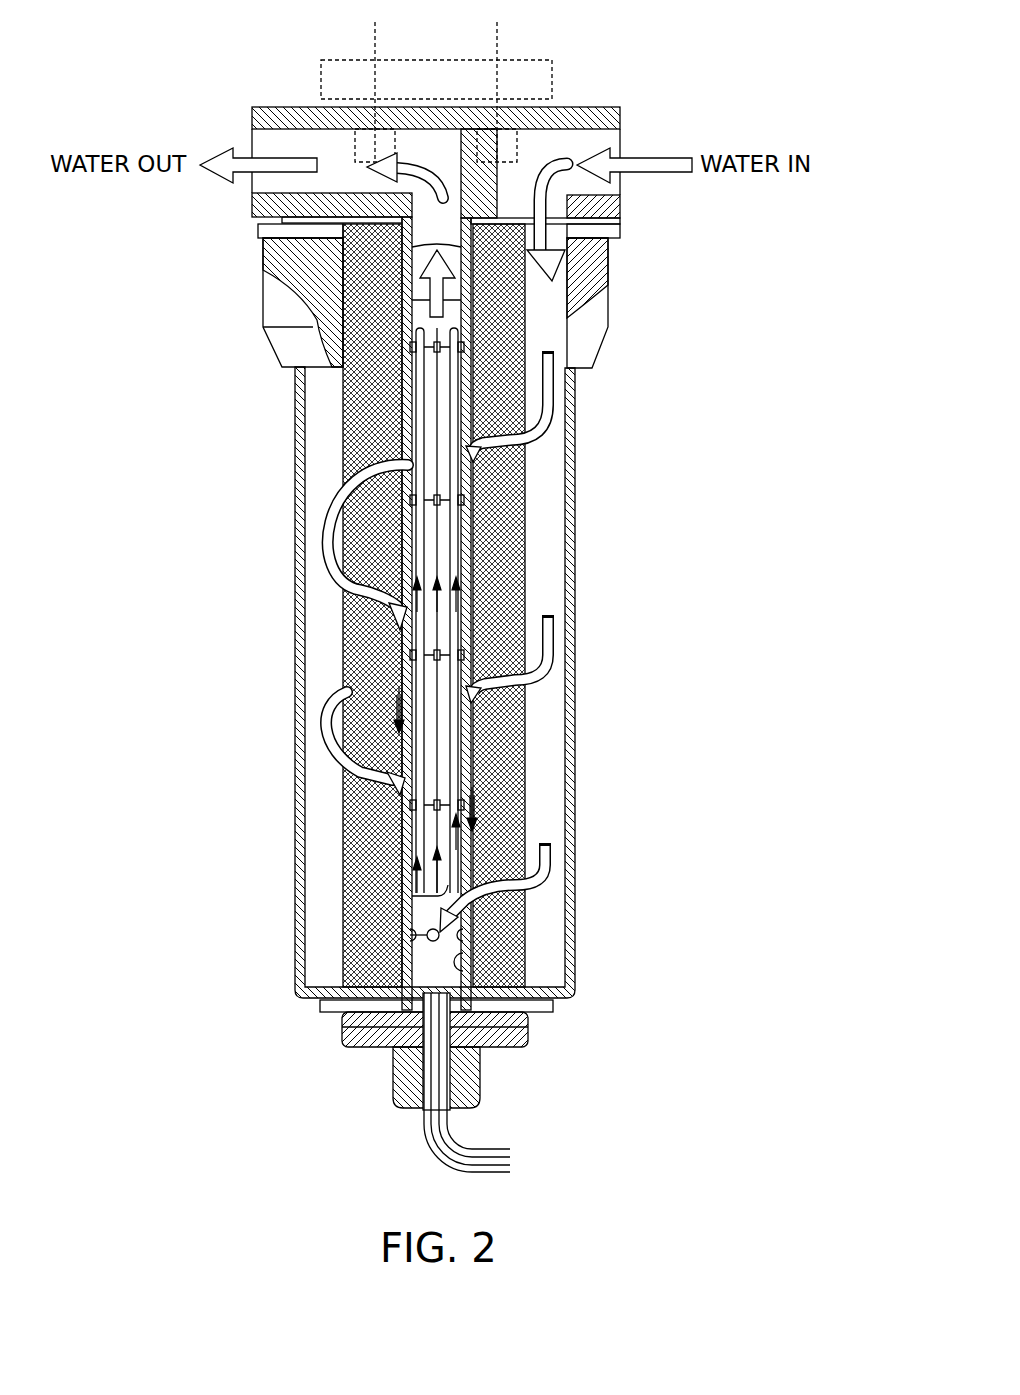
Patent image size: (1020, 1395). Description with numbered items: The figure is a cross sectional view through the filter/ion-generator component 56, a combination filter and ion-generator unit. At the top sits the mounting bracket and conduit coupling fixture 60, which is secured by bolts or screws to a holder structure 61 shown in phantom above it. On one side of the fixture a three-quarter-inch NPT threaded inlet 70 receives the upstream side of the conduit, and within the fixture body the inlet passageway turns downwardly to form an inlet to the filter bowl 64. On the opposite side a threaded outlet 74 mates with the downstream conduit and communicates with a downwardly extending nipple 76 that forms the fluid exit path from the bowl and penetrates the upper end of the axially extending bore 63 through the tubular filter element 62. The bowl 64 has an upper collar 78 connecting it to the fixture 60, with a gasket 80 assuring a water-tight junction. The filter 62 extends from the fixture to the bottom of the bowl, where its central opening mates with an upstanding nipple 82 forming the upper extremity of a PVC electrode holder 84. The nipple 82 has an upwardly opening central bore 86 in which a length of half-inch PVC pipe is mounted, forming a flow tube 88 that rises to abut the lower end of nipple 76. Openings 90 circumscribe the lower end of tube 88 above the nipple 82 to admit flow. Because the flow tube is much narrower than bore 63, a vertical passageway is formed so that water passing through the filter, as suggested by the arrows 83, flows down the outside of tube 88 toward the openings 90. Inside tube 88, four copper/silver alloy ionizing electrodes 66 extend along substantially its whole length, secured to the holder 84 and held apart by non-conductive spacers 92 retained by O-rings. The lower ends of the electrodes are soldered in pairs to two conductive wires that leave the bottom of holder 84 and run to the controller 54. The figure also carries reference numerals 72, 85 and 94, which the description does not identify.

The controller 54 is at (625, 1140).
The filter/ion-generator component 56 is at (285, 1082).
The mounting bracket and conduit coupling fixture 60 is at (283, 107).
The holder structure 61 is at (527, 62).
The filter element 62 is at (345, 395).
The axially extending bore 63 is at (395, 463).
The filter bowl 64 is at (298, 615).
The ionizing electrodes 66 is at (437, 567).
The threaded inlet 70 is at (620, 140).
The inlet passage wall 72 is at (620, 205).
The threaded outlet 74 is at (252, 187).
The downwardly extending nipple 76 is at (470, 247).
The upper collar 78 is at (610, 290).
The gasket 80 is at (280, 220).
The upstanding nipple 82 is at (403, 950).
The arrows 83 is at (552, 392).
The PVC electrode holder 84 is at (362, 1048).
The flow indicators 85 is at (397, 707).
The central bore 86 is at (467, 963).
The flow tube 88 is at (407, 322).
The openings 90 is at (427, 935).
The non-conductive spacers 92 is at (457, 652).
The cable 94 is at (477, 1142).